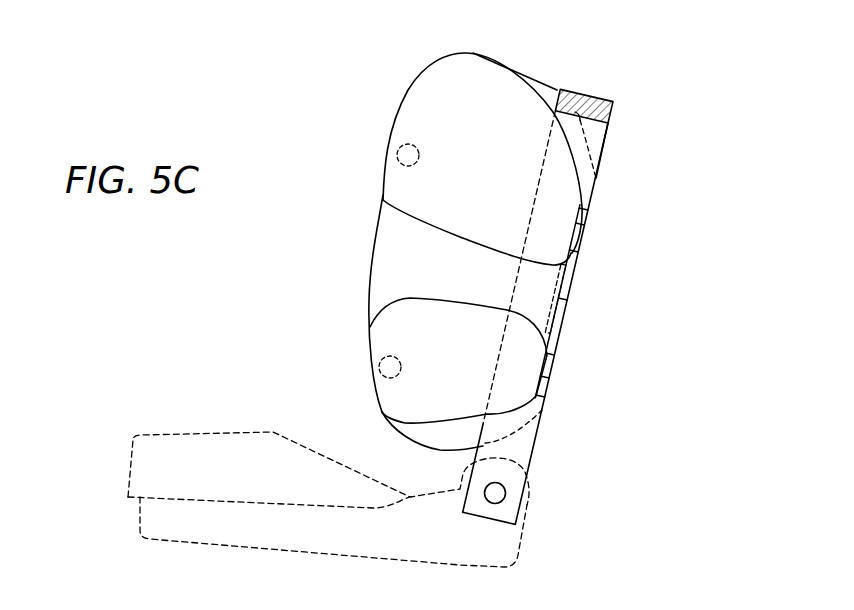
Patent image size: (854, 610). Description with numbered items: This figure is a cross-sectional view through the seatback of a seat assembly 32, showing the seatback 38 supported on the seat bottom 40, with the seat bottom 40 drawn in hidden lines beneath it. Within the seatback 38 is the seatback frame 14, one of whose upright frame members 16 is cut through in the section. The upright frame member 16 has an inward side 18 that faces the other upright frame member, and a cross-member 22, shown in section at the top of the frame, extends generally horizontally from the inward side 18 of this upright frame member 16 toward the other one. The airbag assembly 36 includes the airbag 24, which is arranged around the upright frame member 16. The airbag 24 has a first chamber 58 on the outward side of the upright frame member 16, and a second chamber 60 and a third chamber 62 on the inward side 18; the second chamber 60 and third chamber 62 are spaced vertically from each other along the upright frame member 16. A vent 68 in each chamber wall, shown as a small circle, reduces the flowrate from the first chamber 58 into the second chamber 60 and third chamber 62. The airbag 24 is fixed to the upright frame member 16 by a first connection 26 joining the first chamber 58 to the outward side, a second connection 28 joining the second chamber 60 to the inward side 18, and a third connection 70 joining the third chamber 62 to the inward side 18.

The seatback frame 14 is at (622, 121).
The upright frame member 16 is at (602, 158).
The inward side 18 is at (590, 132).
The cross-member 22 is at (597, 95).
The airbag 24 is at (361, 270).
The first connection 26 is at (560, 300).
The second connection 28 is at (552, 378).
The seat assembly 32 is at (221, 373).
The airbag assembly 36 is at (366, 105).
The seatback 38 is at (641, 287).
The seat bottom 40 is at (127, 462).
The first chamber 58 is at (375, 227).
The second chamber 60 is at (407, 335).
The third chamber 62 is at (450, 105).
The vent 68 is at (397, 153).
The third connection 70 is at (583, 225).